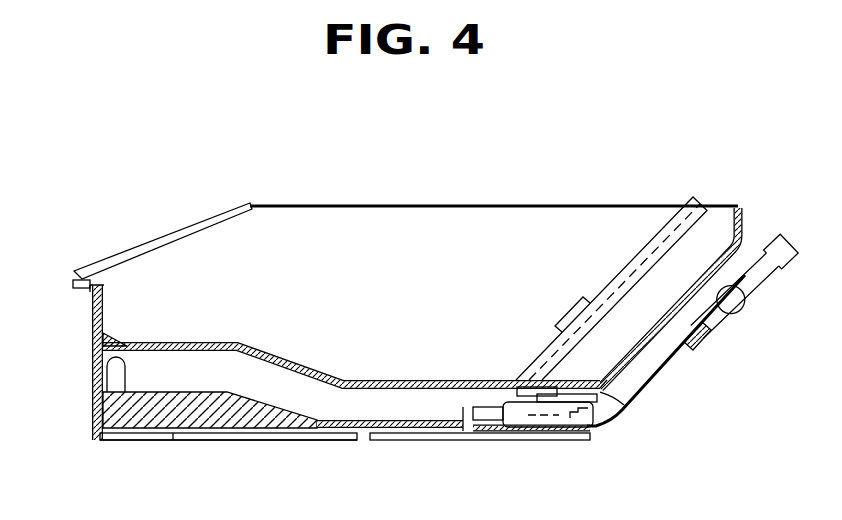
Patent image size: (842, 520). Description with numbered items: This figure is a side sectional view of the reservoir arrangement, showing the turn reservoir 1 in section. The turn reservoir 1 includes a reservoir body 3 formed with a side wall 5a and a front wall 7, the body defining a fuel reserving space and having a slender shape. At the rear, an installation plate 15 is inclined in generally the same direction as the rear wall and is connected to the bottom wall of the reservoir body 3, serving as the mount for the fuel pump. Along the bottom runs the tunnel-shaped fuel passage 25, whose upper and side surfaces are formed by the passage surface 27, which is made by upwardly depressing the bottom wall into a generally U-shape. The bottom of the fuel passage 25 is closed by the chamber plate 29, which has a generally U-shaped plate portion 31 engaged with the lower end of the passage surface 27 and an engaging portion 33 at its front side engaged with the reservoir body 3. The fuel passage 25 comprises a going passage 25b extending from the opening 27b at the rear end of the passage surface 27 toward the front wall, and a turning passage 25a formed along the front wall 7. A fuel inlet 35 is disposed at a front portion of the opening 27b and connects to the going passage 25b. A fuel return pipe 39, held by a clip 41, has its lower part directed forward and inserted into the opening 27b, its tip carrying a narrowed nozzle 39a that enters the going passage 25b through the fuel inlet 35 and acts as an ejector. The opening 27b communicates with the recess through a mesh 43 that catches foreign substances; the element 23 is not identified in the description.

The turn reservoir 1 is at (112, 254).
The reservoir body 3 is at (372, 198).
The left side wall 5a is at (453, 212).
The front wall 7 is at (92, 318).
The installation plate 15 is at (652, 236).
The connector 23 is at (586, 428).
The fuel passage 25 is at (165, 378).
The turning passage 25a is at (110, 378).
The going passage 25b is at (336, 441).
The passage surface 27 is at (394, 385).
The opening 27b is at (620, 414).
The chamber plate 29 is at (223, 450).
The plate portion 31 is at (416, 441).
The engaging portion 33 is at (176, 441).
The fuel inlet 35 is at (463, 432).
The fuel return pipe 39 is at (717, 312).
The nozzle 39a is at (493, 421).
The clip 41 is at (700, 352).
The mesh 43 is at (540, 385).